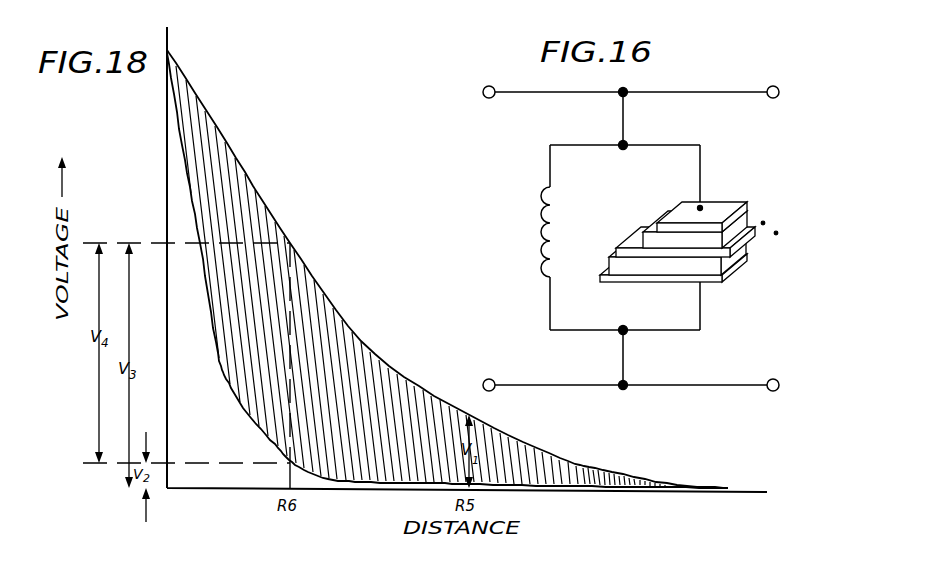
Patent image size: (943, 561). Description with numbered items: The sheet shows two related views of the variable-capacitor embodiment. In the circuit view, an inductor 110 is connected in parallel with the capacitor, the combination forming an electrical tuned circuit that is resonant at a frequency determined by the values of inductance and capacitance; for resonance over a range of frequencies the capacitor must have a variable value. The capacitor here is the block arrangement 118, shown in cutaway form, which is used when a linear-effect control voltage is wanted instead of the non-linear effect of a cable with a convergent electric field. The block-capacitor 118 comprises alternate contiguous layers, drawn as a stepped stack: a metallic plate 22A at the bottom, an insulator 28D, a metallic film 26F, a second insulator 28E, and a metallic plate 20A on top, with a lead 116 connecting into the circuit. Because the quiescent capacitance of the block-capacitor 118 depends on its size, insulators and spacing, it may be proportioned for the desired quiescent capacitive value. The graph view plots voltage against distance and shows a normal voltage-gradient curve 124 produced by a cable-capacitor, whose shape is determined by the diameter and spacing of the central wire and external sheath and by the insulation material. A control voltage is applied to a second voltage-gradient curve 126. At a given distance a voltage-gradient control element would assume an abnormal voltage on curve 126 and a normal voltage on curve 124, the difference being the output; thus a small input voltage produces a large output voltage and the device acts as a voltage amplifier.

In FIG. 18, the normal voltage-gradient curve 124 is at (180, 128).
In FIG. 18, the voltage-gradient curve 126 is at (248, 174).
In FIG. 16, the inductor 110 is at (523, 258).
In FIG. 16, the metallic plate 20A is at (715, 212).
In FIG. 16, the insulator 28E is at (757, 209).
In FIG. 16, the metallic film 26F is at (764, 223).
In FIG. 16, the intermediate layer 116 is at (777, 233).
In FIG. 16, the insulator 28D is at (733, 248).
In FIG. 16, the block-capacitor 118 is at (755, 270).
In FIG. 16, the metallic plate 22A is at (728, 278).